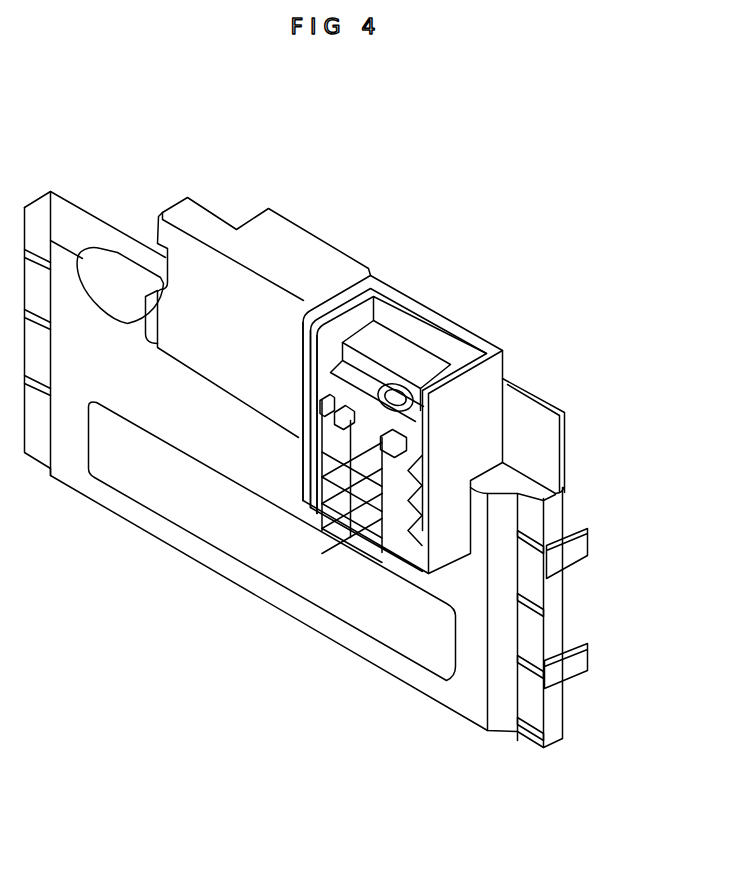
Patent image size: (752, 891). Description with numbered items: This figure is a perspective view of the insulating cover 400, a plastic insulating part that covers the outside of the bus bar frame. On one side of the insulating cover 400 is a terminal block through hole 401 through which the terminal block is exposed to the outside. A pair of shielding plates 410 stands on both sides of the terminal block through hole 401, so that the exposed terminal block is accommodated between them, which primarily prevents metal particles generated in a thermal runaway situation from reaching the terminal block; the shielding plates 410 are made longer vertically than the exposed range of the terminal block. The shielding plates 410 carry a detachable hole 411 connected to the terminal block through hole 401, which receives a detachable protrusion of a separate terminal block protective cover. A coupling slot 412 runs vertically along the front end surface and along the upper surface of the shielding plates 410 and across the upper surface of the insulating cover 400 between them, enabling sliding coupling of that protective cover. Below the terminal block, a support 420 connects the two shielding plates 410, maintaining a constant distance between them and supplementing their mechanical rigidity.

The insulating cover 400 is at (350, 172).
The terminal block through hole 401 is at (400, 348).
The shielding plates 410 is at (318, 300).
The detachable hole 411 is at (317, 377).
The coupling slot 412 is at (417, 562).
The support 420 is at (370, 430).